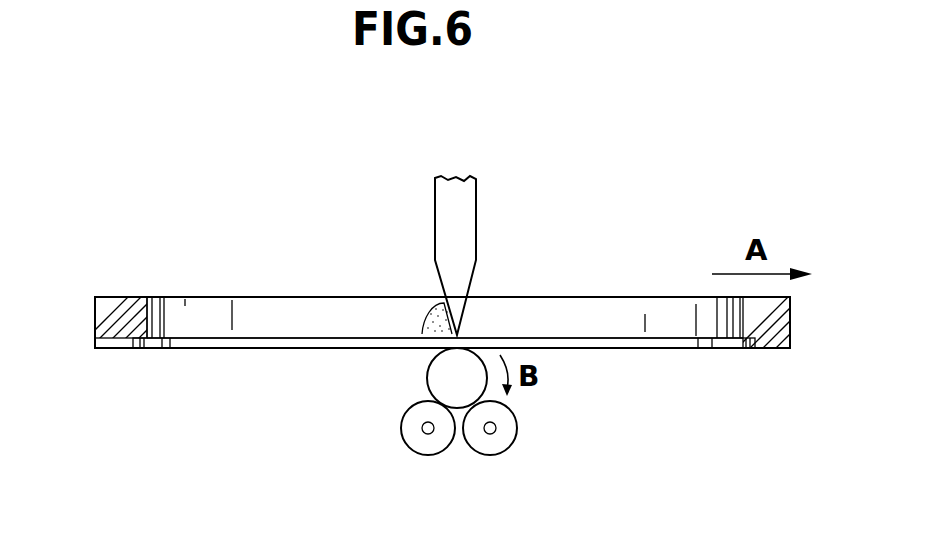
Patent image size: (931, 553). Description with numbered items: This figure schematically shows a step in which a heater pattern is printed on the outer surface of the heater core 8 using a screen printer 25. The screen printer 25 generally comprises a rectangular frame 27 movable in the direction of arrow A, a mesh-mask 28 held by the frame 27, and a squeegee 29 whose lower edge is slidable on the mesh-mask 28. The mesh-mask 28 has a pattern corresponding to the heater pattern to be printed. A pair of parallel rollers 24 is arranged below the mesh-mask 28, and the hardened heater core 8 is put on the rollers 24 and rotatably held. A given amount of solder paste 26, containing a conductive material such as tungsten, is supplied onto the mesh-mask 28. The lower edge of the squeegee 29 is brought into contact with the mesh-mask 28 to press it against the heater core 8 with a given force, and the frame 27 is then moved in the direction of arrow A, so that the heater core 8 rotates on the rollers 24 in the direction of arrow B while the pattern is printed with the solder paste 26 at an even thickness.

The screen printer 25 is at (252, 216).
The rectangular frame 27 is at (118, 297).
The mesh-mask 28 is at (236, 346).
The squeegee 29 is at (463, 210).
The solder paste 26 is at (430, 305).
The heater core 8 is at (427, 372).
The rollers 24 is at (401, 428).